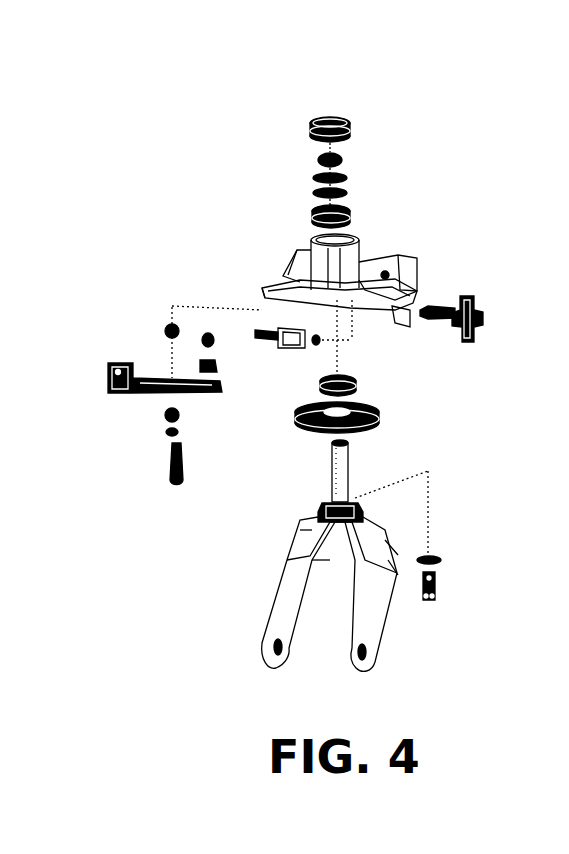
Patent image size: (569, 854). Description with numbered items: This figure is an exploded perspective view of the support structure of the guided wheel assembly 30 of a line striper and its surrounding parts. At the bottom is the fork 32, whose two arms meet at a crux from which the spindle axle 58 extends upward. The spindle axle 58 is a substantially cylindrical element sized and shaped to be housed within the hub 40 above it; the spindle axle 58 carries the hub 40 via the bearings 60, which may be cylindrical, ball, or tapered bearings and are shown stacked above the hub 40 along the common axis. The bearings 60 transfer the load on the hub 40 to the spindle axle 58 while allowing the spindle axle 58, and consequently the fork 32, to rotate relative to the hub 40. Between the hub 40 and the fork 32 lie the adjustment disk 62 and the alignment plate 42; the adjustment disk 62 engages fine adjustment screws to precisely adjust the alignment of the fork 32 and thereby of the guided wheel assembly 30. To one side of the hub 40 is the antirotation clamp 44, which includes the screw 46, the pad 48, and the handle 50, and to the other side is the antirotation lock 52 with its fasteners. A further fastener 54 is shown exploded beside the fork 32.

The guided wheel assembly 30 is at (232, 589).
The fork 32 is at (383, 617).
The hub 40 is at (350, 253).
The alignment plate 42 is at (379, 418).
The antirotation clamp 44 is at (466, 268).
The screw 46 is at (433, 310).
The pad 48 is at (290, 349).
The handle 50 is at (483, 298).
The antirotation lock 52 is at (115, 397).
The fastener 54 is at (440, 596).
The spindle axle 58 is at (337, 468).
The bearings 60 is at (350, 210).
The adjustment disk 62 is at (356, 378).